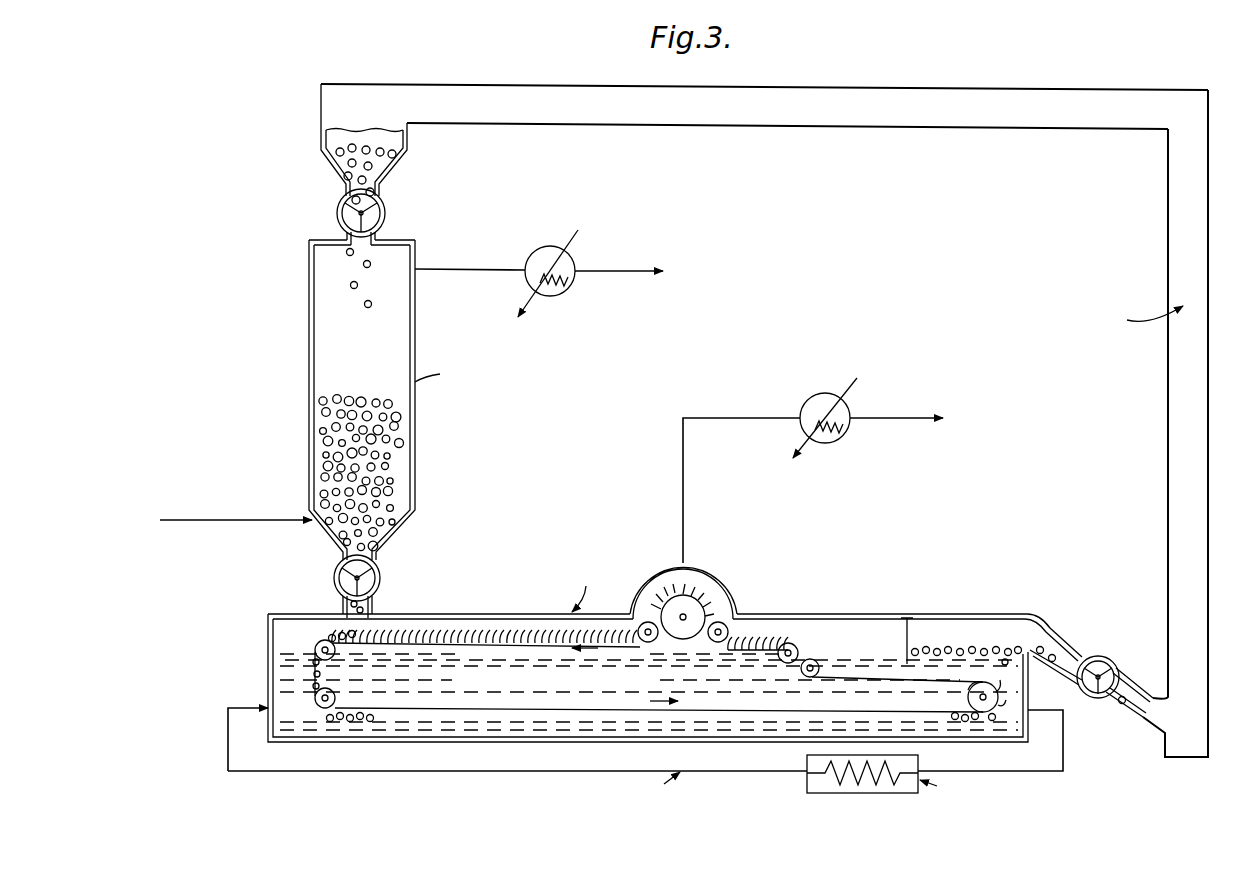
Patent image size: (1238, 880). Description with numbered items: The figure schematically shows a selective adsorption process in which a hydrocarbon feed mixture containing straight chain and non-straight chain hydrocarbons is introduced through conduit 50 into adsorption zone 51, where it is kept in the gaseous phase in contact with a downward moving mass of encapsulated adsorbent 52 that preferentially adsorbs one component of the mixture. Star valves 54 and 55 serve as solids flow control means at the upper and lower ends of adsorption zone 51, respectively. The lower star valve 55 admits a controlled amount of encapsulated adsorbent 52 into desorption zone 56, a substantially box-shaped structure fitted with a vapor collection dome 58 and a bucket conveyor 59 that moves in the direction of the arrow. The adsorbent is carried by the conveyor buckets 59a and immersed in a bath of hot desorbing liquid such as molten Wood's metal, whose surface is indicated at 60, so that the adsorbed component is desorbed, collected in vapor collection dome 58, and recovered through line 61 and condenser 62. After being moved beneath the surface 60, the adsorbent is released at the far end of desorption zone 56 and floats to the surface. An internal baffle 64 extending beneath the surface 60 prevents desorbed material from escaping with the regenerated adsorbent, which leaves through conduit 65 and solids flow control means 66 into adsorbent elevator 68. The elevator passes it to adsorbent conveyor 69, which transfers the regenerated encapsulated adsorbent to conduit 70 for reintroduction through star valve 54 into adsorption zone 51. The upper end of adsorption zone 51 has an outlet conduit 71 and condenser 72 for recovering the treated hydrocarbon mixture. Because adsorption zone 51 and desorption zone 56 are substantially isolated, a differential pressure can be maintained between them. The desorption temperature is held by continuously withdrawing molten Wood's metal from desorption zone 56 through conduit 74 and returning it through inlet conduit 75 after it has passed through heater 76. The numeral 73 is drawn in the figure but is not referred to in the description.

The conduit 50 is at (245, 522).
The adsorption zone 51 is at (418, 421).
The encapsulated adsorbent 52 is at (378, 387).
The star valve 54 is at (377, 212).
The star valve 55 is at (378, 582).
The desorption zone 56 is at (461, 610).
The vapor collection dome 58 is at (722, 586).
The bucket conveyor 59 is at (776, 630).
The conveyor buckets 59a is at (318, 641).
The surface of the molten Wood's metal 60 is at (860, 632).
The line 61 is at (740, 418).
The condenser 62 is at (808, 400).
The internal baffle 64 is at (922, 628).
The conduit 65 is at (1061, 650).
The solids flow control means 66 is at (1105, 660).
The adsorbent elevator 68 is at (1187, 206).
The adsorbent conveyor 69 is at (874, 88).
The conduit 70 is at (385, 180).
The outlet conduit 71 is at (470, 270).
The condenser 72 is at (638, 268).
The condenser 73 is at (565, 250).
The conduit 74 is at (1063, 749).
The inlet conduit 75 is at (238, 708).
The heater 76 is at (920, 766).